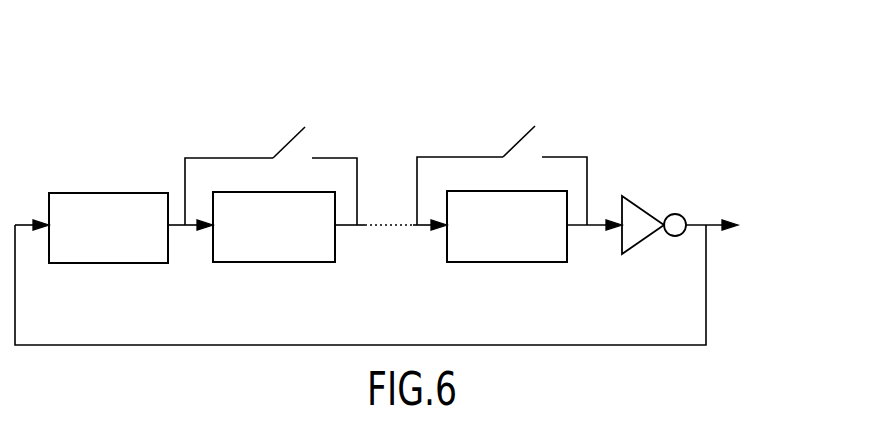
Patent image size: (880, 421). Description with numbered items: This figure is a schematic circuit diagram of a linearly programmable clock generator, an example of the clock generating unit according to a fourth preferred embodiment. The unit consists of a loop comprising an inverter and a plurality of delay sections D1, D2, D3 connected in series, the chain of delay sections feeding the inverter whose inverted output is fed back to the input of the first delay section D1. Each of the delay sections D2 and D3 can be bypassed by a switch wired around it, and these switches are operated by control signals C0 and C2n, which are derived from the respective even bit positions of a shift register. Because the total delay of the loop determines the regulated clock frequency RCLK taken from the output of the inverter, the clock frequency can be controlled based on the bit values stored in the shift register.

The delay section D1 is at (108, 228).
The delay section D2 is at (274, 227).
The delay section D3 is at (507, 226).
The control signal C0 is at (285, 112).
The control signal C2n is at (515, 112).
The regulated clock frequency RCLK is at (742, 225).